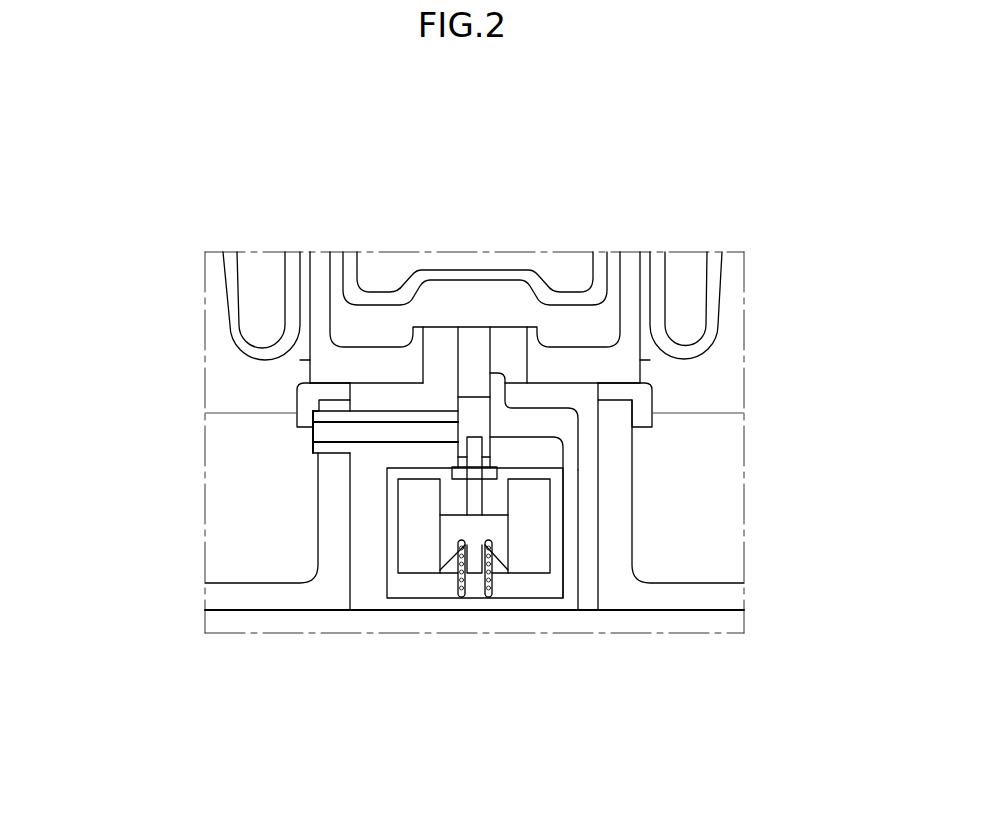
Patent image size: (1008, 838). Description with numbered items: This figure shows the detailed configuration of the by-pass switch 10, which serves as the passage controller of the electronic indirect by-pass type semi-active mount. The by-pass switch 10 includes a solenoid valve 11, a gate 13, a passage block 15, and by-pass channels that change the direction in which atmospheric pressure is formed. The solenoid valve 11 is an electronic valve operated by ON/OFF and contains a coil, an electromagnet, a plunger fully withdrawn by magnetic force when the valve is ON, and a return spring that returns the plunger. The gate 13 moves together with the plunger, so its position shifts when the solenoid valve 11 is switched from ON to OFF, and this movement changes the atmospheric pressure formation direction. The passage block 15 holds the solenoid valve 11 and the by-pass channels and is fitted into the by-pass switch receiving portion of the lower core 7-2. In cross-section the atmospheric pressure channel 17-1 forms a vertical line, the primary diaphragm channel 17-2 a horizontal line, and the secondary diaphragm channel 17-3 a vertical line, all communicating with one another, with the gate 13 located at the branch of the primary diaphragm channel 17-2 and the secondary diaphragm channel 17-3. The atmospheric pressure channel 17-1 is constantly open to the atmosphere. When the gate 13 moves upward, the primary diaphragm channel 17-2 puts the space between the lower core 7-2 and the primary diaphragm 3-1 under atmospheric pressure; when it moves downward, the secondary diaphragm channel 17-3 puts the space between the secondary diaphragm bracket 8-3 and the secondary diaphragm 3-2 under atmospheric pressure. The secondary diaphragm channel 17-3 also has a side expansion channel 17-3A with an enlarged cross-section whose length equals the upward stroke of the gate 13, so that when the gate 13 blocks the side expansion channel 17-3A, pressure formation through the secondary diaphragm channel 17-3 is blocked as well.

The by-pass switch 10 is at (512, 663).
The solenoid valve 11 is at (455, 540).
The gate 13 is at (468, 405).
The passage block 15 is at (362, 555).
The atmospheric pressure channel 17-1 is at (570, 598).
The primary diaphragm channel 17-2 is at (333, 430).
The secondary diaphragm channel 17-3 is at (475, 370).
The side expansion channel 17-3A is at (505, 388).
The primary diaphragm 3-1 is at (658, 295).
The secondary diaphragm 3-2 is at (477, 280).
The lower core 7-2 is at (690, 597).
The secondary diaphragm bracket 8-3 is at (320, 280).